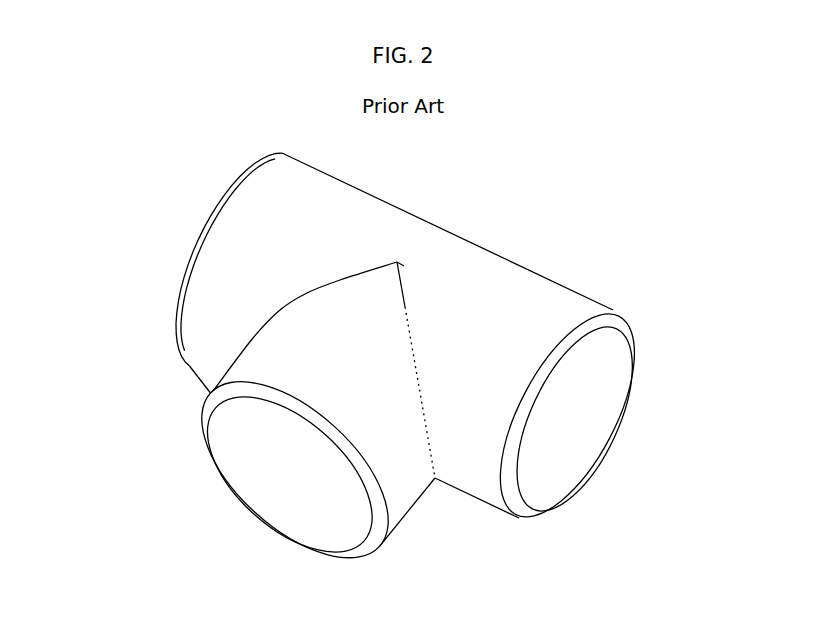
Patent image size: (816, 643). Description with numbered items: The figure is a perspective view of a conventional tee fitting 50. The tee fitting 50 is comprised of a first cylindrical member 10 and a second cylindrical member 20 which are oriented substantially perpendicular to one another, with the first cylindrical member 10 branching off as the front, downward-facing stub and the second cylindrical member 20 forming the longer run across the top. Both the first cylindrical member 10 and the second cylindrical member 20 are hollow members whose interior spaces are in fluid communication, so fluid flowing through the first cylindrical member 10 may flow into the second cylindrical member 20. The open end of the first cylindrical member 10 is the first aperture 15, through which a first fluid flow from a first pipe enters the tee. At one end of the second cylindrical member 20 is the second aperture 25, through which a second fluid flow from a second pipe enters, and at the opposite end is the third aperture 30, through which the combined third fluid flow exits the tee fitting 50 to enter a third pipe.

The conventional tee fitting 50 is at (136, 235).
The first cylindrical member 10 is at (243, 377).
The first aperture 15 is at (245, 488).
The second cylindrical member 20 is at (545, 287).
The second aperture 25 is at (193, 234).
The third aperture 30 is at (588, 432).